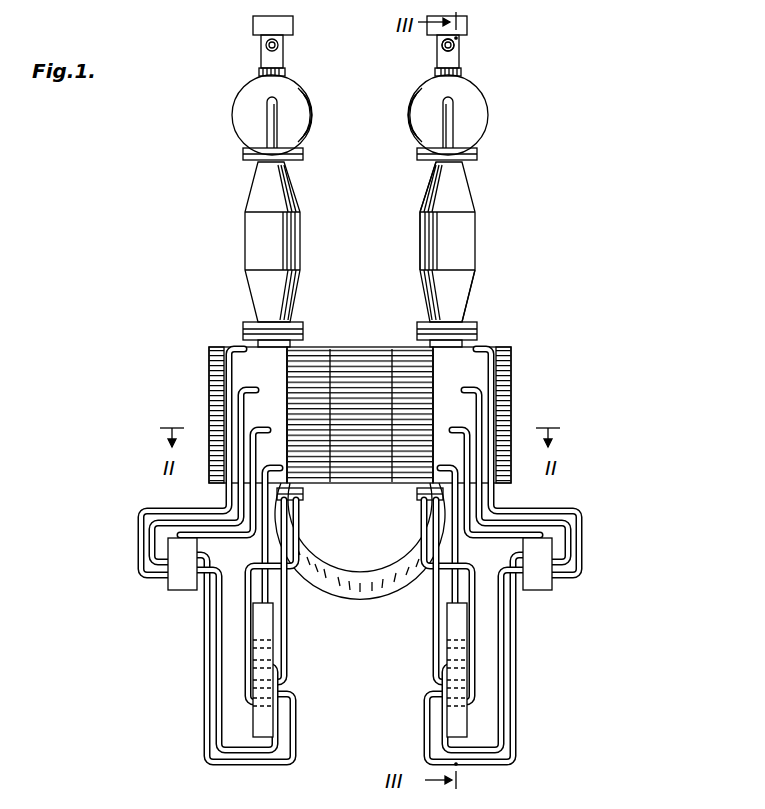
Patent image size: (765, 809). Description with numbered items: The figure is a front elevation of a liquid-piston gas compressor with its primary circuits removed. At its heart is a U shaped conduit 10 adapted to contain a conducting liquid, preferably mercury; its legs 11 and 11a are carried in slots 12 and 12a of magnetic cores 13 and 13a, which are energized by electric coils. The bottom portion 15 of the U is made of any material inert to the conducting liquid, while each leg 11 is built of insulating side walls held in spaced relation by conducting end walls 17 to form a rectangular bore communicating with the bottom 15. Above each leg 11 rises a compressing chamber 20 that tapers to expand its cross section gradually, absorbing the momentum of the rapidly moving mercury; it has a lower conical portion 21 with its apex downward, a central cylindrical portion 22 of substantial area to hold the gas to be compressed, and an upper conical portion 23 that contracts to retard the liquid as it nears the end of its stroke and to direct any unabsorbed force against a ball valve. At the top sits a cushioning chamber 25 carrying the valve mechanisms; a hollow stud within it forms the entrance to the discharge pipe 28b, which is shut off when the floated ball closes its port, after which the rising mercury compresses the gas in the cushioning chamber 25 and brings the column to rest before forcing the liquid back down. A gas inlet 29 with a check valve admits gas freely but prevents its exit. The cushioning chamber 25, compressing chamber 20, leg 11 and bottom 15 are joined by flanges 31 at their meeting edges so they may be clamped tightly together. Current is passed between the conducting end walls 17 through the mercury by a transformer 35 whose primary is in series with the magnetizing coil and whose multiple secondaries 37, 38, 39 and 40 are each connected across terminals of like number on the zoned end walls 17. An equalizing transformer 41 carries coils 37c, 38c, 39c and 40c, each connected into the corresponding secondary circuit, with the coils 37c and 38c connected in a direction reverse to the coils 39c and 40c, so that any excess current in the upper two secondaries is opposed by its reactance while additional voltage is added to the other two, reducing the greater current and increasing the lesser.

The U shaped conduit 10 is at (360, 562).
The leg 11 is at (440, 420).
The leg 11a is at (286, 451).
The slot 12 is at (478, 346).
The slot 12a is at (245, 347).
The magnetic core 13 is at (511, 373).
The magnetic core 13a is at (212, 372).
The bottom portion 15 is at (382, 596).
The conducting end walls 17 is at (446, 376).
The compressing chamber 20 is at (242, 242).
The lower conical portion 21 is at (470, 302).
The central cylindrical portion 22 is at (420, 244).
The upper conical portion 23 is at (470, 193).
The cushioning chamber 25 is at (240, 116).
The discharge pipe 28b is at (458, 45).
The gas inlet 29 is at (266, 128).
The flanges 31 is at (245, 327).
The transformer 35 is at (544, 588).
The secondary 37 is at (507, 352).
The secondary 38 is at (506, 401).
The secondary 39 is at (480, 449).
The secondary 40 is at (470, 472).
The coil 37c is at (440, 650).
The coil 38c is at (495, 660).
The coil 39c is at (430, 692).
The coil 40c is at (482, 700).
The equalizing transformer 41 is at (452, 673).